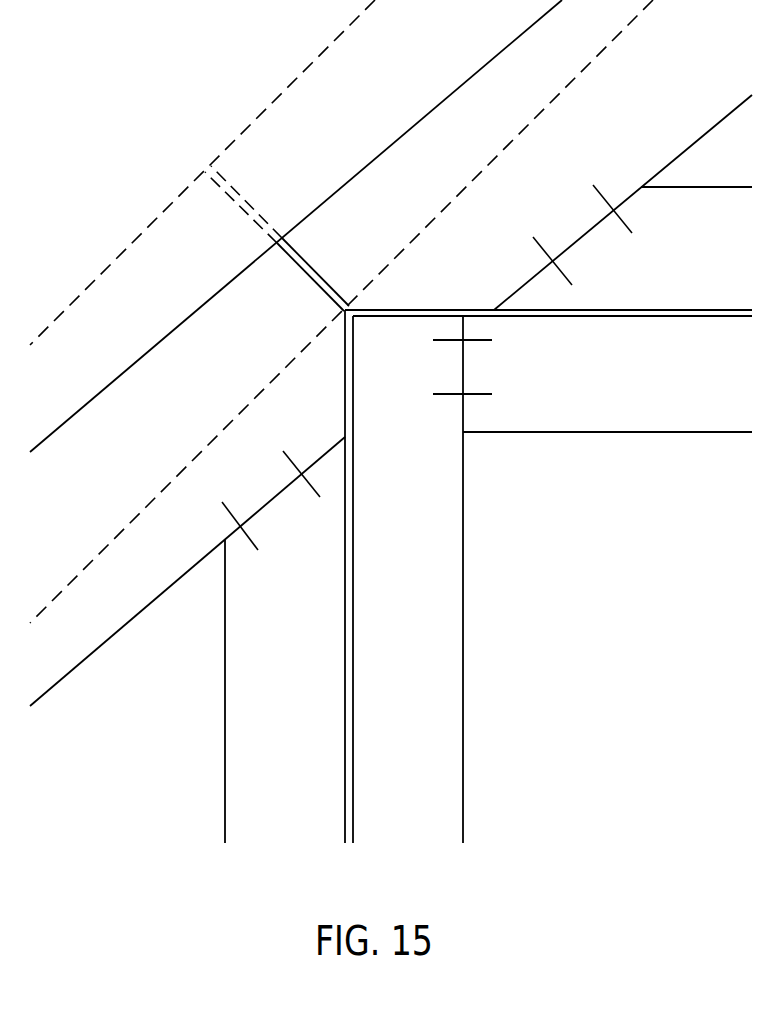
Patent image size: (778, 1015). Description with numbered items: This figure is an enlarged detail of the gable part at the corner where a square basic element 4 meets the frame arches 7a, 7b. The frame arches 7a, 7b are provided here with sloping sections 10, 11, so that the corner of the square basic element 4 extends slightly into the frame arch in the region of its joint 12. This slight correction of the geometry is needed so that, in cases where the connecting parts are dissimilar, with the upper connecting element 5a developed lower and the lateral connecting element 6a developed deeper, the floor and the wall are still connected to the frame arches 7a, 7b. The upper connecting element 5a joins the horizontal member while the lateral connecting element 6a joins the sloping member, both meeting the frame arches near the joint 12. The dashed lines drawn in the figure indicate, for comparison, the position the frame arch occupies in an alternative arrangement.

The square basic element 4 is at (463, 523).
The upper connecting element 5a is at (685, 186).
The lateral connecting element 6a is at (226, 604).
The frame arch 7a is at (462, 86).
The frame arch 7b is at (127, 370).
The sloping section 10 is at (397, 308).
The sloping section 11 is at (345, 399).
The joint 12 is at (306, 270).